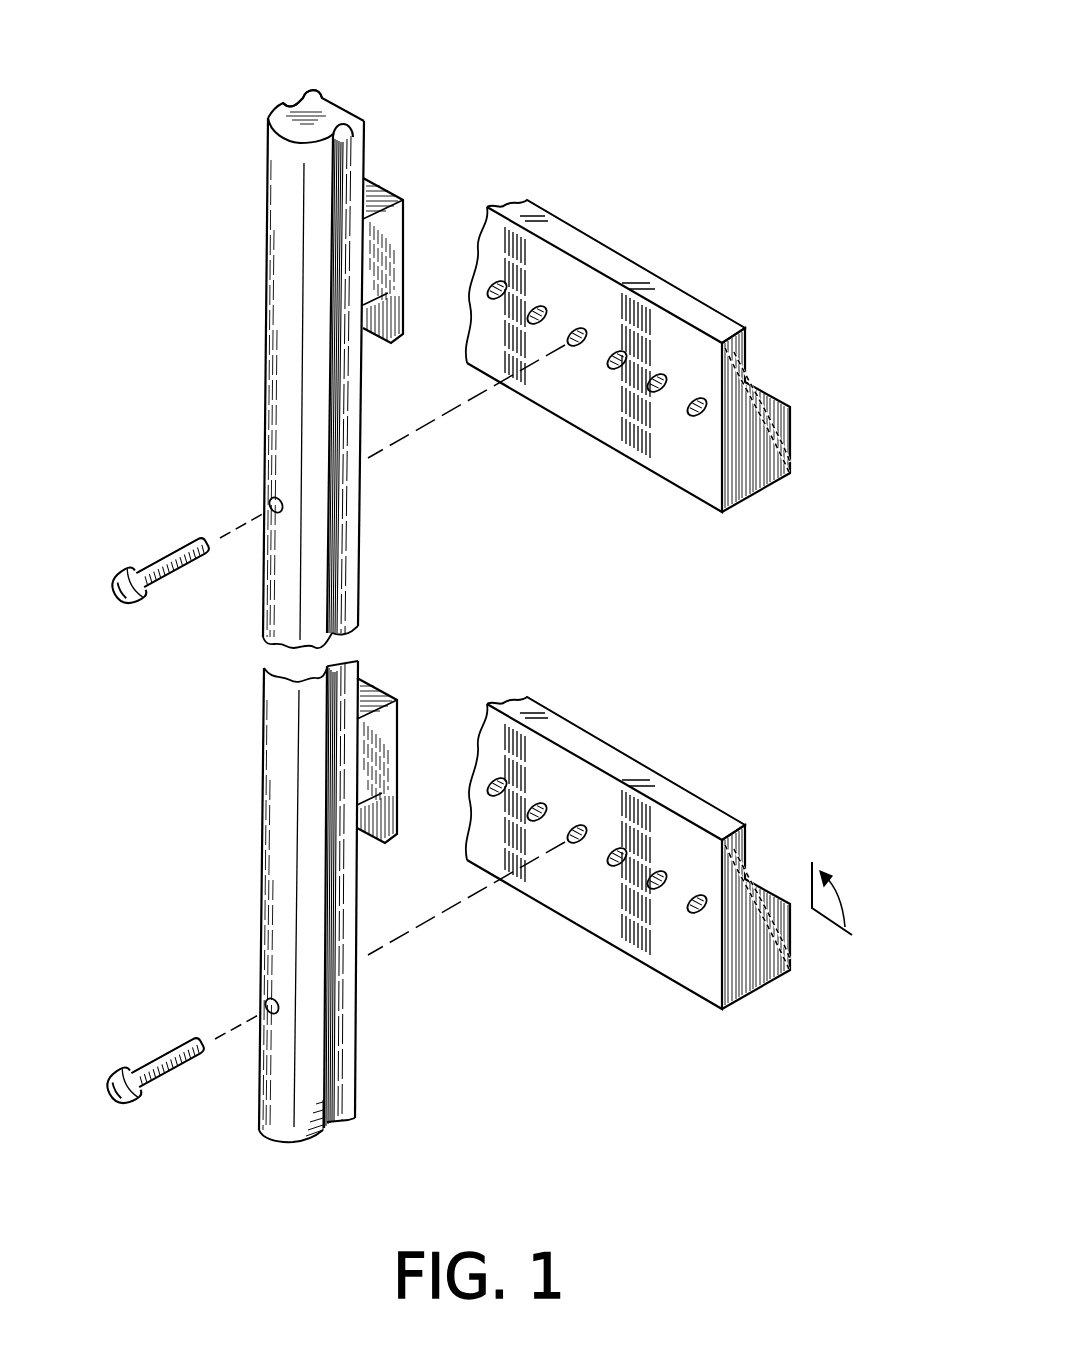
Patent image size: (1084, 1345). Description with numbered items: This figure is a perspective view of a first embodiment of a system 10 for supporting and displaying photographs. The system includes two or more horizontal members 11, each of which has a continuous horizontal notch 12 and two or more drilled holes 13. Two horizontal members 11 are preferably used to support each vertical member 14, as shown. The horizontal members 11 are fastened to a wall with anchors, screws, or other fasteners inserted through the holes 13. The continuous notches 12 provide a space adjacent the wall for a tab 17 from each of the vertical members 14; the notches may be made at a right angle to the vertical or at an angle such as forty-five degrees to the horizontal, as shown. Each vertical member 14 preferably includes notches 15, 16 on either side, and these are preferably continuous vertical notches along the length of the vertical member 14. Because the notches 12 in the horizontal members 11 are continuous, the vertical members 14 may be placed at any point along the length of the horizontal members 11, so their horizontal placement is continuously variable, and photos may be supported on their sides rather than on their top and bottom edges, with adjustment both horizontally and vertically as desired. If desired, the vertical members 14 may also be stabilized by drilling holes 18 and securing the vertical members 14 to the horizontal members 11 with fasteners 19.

The system 10 is at (535, 111).
The horizontal member 11 is at (703, 305).
The continuous horizontal notch 12 is at (765, 385).
The drilled holes 13 is at (690, 416).
The vertical member 14 is at (322, 97).
The notch 15 is at (297, 100).
The notch 16 is at (350, 128).
The tab 17 is at (386, 180).
The holes 18 is at (268, 498).
The fasteners 19 is at (163, 562).